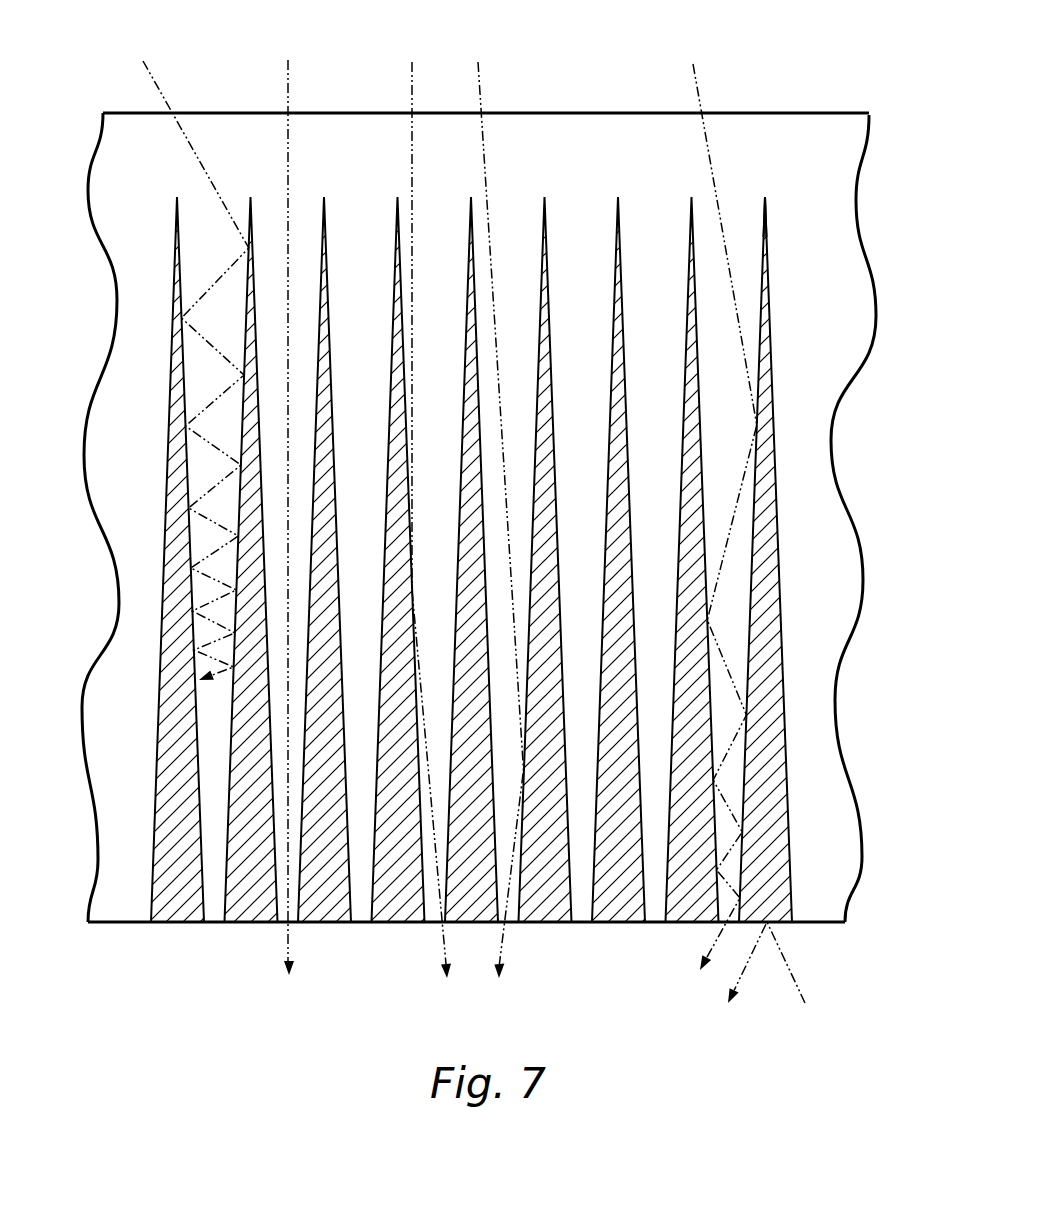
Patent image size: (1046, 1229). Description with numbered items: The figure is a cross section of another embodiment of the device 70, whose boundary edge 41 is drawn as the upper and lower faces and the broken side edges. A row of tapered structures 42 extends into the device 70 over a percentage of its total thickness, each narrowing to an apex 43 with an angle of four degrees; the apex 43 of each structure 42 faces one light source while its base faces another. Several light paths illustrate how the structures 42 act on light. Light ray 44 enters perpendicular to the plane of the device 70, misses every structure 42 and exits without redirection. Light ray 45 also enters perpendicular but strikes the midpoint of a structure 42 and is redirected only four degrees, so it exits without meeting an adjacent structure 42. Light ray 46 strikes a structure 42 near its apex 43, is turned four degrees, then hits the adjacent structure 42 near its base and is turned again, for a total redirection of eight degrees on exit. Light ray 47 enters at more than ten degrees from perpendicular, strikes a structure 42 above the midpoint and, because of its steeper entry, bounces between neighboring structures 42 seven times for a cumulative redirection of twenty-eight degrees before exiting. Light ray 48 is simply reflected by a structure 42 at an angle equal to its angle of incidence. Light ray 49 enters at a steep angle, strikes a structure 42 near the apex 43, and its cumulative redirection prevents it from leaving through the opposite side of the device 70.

The device 70 is at (902, 354).
The boundary edge 41 is at (124, 112).
The structure 42 is at (775, 411).
The apex 43 is at (767, 203).
The light ray 44 is at (288, 87).
The light ray 45 is at (412, 92).
The light ray 46 is at (480, 97).
The light ray 47 is at (700, 95).
The light ray 48 is at (786, 956).
The light ray 49 is at (160, 85).